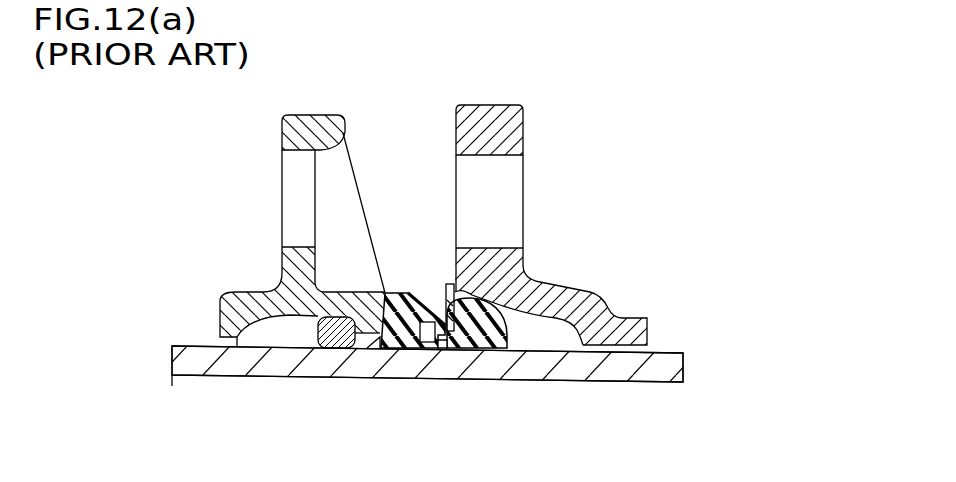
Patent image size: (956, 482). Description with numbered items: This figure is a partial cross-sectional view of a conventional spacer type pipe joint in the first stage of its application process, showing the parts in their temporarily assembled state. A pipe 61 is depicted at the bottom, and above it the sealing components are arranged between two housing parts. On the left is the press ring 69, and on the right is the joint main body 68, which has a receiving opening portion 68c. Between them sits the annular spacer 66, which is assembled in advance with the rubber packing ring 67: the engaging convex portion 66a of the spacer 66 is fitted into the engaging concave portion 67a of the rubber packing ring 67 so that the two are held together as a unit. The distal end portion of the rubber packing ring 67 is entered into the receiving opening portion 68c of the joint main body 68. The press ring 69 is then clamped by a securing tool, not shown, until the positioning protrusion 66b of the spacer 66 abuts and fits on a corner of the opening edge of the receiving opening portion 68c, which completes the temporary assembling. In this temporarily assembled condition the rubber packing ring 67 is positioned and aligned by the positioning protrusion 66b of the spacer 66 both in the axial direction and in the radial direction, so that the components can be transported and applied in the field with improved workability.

The shaft 61 is at (192, 347).
The press ring 69 is at (260, 282).
The annular spacer 66 is at (400, 287).
The engaging convex portion 66a is at (445, 312).
The positioning protrusion 66b is at (443, 285).
The rubber packing ring 67 is at (503, 327).
The engaging concave portion 67a is at (446, 352).
The joint main body 68 is at (593, 293).
The receiving opening portion 68c is at (562, 333).